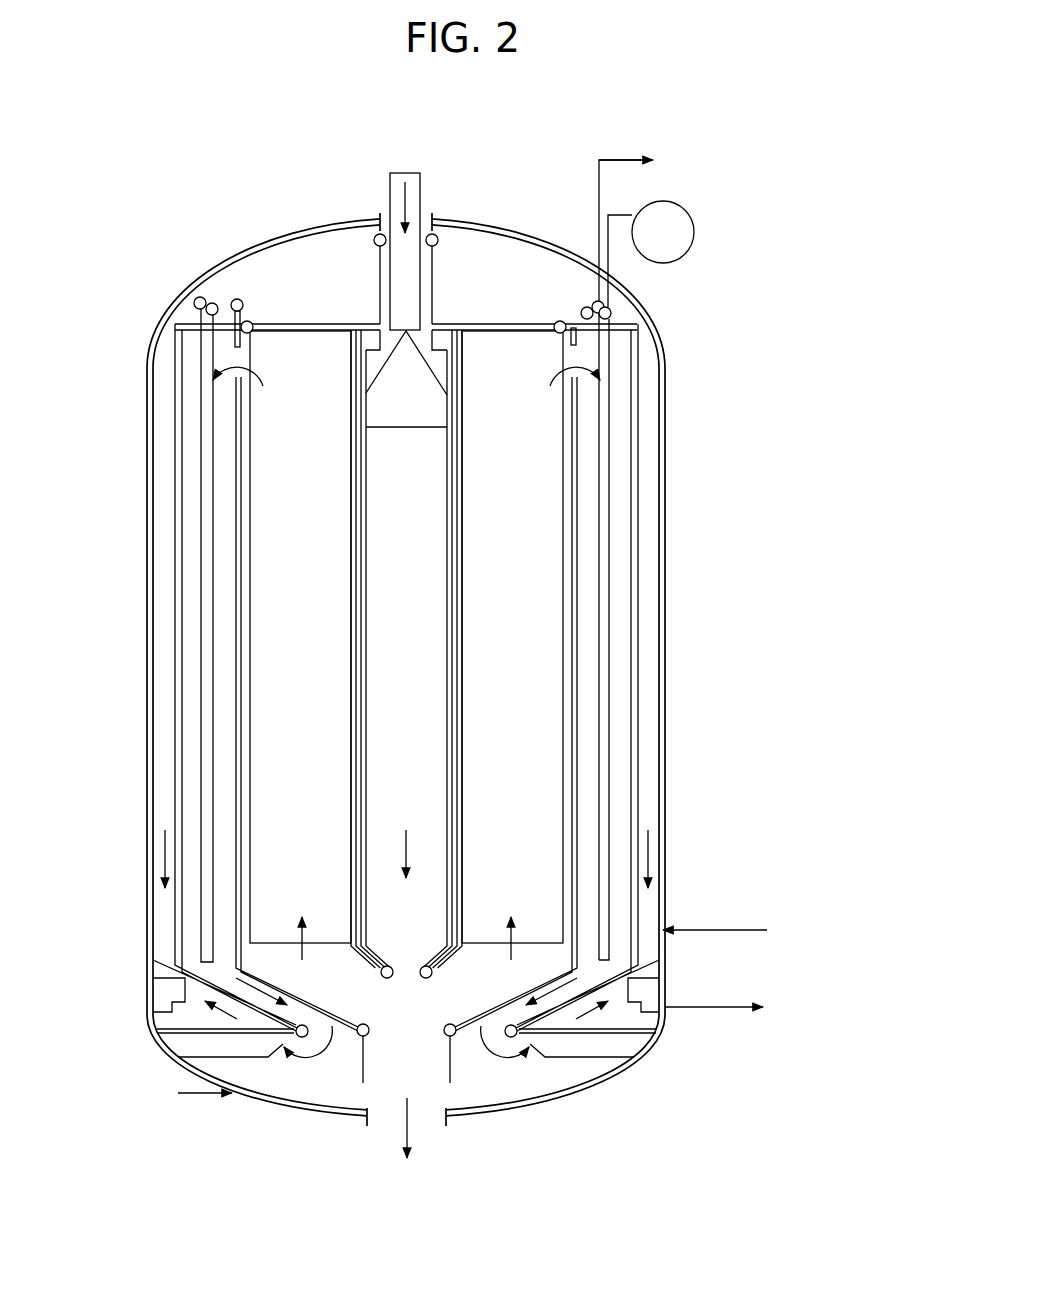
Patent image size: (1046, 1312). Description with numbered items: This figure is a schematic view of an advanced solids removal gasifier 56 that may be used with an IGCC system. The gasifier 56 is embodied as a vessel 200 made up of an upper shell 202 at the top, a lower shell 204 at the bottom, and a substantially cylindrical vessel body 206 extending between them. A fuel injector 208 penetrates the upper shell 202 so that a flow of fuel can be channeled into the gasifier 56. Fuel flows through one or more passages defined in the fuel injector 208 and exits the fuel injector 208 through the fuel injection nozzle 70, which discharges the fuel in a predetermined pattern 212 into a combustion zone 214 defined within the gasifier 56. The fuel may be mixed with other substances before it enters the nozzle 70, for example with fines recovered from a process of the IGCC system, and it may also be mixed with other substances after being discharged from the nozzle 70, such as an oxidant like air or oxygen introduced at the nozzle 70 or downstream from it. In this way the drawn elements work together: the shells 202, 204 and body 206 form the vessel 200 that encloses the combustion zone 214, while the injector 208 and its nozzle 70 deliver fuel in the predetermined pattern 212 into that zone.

The advanced solids removal gasifier 56 is at (208, 138).
The vessel 200 is at (153, 286).
The upper shell 202 is at (213, 263).
The lower shell 204 is at (306, 1110).
The vessel body 206 is at (665, 553).
The fuel injector 208 is at (403, 172).
The fuel injection nozzle 70 is at (380, 343).
The predetermined pattern 212 is at (430, 410).
The combustion zone 214 is at (427, 514).